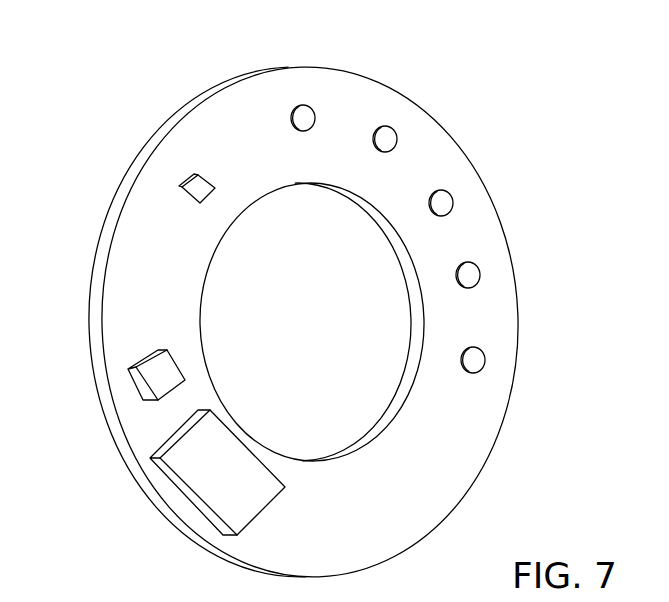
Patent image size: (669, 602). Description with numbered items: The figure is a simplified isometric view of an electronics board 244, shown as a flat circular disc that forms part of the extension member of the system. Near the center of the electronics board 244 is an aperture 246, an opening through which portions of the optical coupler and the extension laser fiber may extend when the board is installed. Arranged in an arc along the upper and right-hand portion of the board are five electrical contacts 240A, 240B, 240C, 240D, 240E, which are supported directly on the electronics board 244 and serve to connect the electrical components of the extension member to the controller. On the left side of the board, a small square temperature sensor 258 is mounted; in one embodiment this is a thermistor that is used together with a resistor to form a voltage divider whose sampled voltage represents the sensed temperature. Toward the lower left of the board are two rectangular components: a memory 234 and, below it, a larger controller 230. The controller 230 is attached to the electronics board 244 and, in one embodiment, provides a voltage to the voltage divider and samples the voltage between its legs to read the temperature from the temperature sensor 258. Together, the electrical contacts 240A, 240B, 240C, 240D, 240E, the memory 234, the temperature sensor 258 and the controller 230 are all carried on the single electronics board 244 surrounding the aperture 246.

The electronics board 244 is at (478, 450).
The aperture 246 is at (223, 302).
The electrical contact 240A is at (302, 107).
The electrical contact 240B is at (387, 132).
The electrical contact 240C is at (446, 198).
The electrical contact 240D is at (473, 270).
The electrical contact 240E is at (478, 355).
The temperature sensor 258 is at (197, 175).
The memory 234 is at (147, 380).
The controller 230 is at (189, 475).